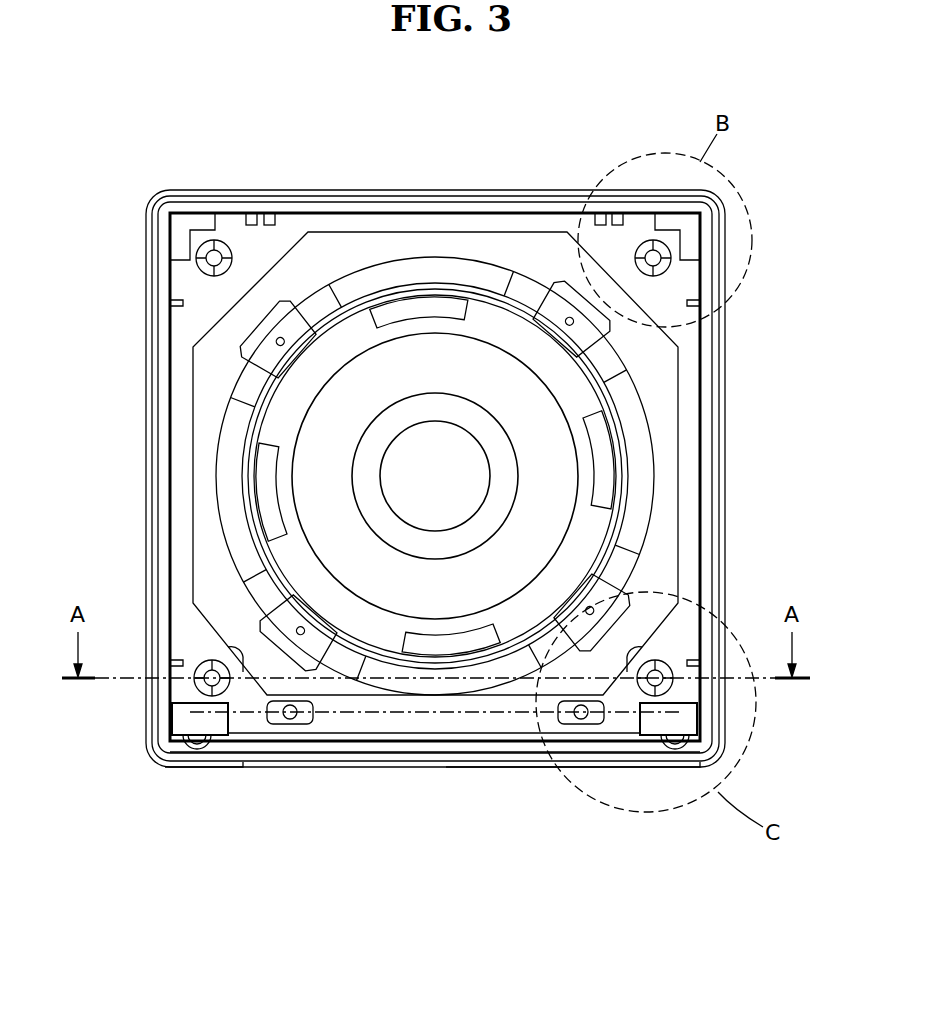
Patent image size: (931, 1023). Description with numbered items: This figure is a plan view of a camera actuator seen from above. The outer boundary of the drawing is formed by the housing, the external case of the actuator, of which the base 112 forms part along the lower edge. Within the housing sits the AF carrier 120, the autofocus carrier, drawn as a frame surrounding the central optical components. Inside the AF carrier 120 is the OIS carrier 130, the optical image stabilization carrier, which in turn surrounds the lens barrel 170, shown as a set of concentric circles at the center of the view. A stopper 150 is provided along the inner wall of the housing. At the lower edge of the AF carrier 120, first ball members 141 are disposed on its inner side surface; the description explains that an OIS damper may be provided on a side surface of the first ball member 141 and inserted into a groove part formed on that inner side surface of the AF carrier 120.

The base 112 is at (210, 752).
The AF carrier 120 is at (192, 720).
The OIS carrier 130 is at (213, 590).
The first ball member 141 is at (197, 746).
The stopper 150 is at (690, 560).
The lens barrel 170 is at (553, 453).